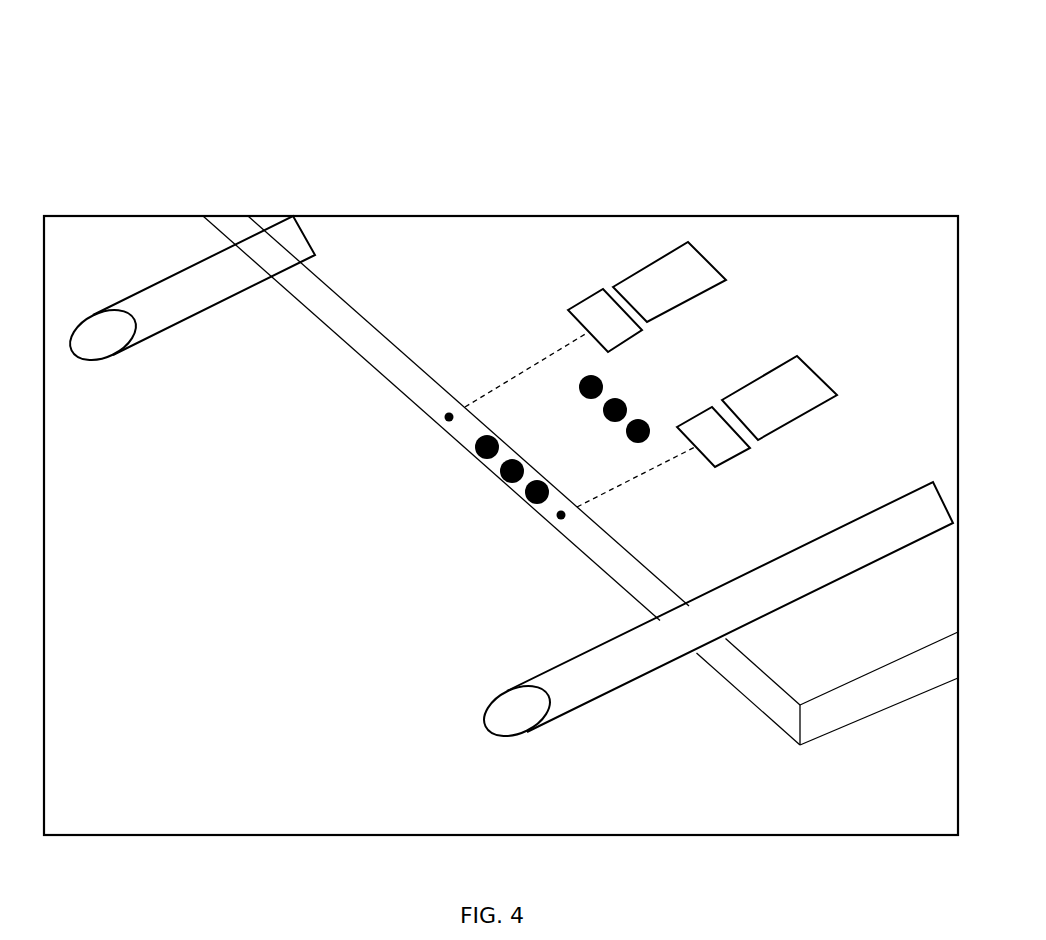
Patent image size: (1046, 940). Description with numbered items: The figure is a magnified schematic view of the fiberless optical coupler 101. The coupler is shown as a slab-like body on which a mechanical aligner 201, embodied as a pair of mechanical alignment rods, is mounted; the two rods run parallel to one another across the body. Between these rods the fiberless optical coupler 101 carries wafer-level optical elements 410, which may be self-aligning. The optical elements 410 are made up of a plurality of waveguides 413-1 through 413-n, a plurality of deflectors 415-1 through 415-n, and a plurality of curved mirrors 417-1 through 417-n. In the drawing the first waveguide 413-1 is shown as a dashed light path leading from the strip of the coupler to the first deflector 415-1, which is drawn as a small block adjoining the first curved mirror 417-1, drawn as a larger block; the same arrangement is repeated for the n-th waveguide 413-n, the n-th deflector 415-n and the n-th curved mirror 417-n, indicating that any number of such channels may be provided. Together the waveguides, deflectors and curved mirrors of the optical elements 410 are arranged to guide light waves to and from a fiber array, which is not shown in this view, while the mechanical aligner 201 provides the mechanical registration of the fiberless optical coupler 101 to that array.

The fiberless optical coupler 101 is at (425, 263).
The mechanical aligner 201 is at (103, 333).
The wafer-level optical elements 410 is at (642, 35).
The waveguide 413-1 is at (535, 350).
The deflector 415-1 is at (578, 282).
The curved mirror 417-1 is at (643, 248).
The waveguide 413-n is at (625, 485).
The deflector 415-n is at (723, 443).
The curved mirror 417-n is at (785, 398).